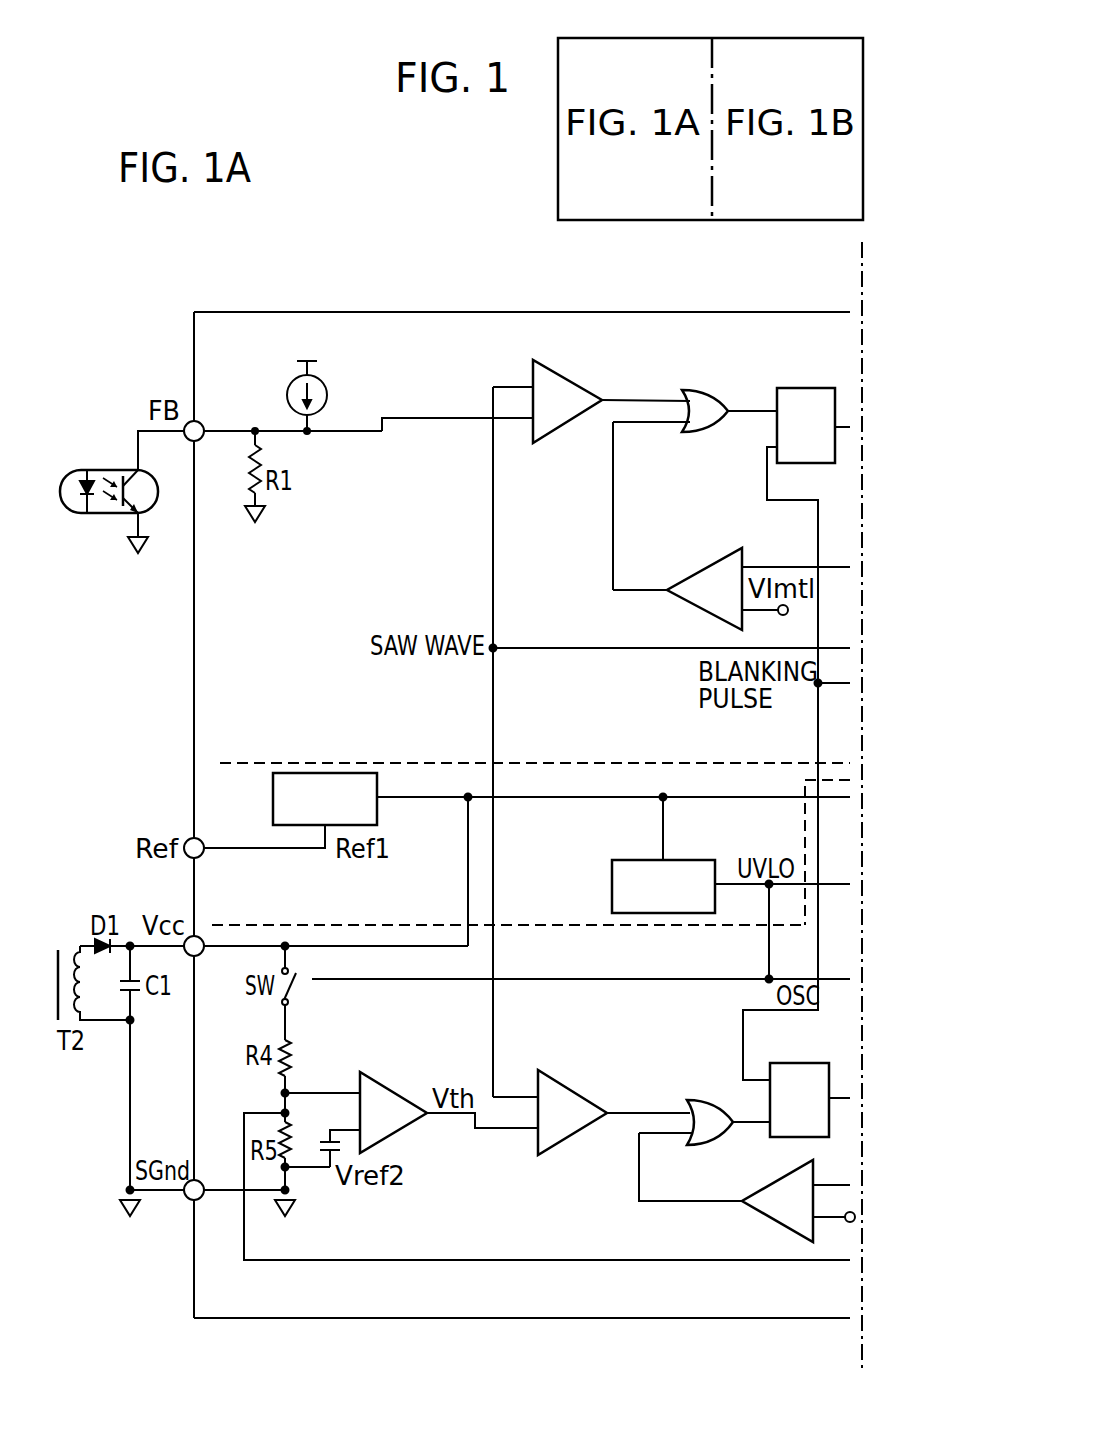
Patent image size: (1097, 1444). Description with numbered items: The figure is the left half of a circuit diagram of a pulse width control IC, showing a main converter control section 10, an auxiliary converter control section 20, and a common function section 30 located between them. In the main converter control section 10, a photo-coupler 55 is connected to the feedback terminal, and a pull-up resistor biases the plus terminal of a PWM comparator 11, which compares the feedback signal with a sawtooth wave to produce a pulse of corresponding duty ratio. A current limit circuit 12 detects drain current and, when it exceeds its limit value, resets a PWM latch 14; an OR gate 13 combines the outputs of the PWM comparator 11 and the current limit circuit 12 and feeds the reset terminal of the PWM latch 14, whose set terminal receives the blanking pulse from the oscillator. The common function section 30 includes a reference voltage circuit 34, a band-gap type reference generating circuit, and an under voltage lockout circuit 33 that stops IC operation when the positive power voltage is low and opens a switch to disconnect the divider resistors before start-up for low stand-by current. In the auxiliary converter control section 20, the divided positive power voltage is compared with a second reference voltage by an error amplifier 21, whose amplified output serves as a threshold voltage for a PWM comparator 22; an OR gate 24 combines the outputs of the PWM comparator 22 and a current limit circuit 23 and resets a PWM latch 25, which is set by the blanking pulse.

The main converter control section 10 is at (350, 311).
The PWM comparator 11 is at (553, 375).
The current limit circuit 12 is at (668, 570).
The OR gate 13 is at (708, 428).
The PWM latch 14 is at (778, 388).
The auxiliary converter control section 20 is at (388, 1302).
The error amplifier 21 is at (358, 1082).
The PWM comparator 22 is at (546, 1078).
The current limit circuit 23 is at (762, 1205).
The OR gate 24 is at (708, 1142).
The PWM latch 25 is at (778, 1064).
The common function section 30 is at (451, 814).
The under voltage lockout circuit 33 is at (612, 882).
The reference voltage circuit 34 is at (300, 772).
The photo-coupler 55 is at (102, 468).